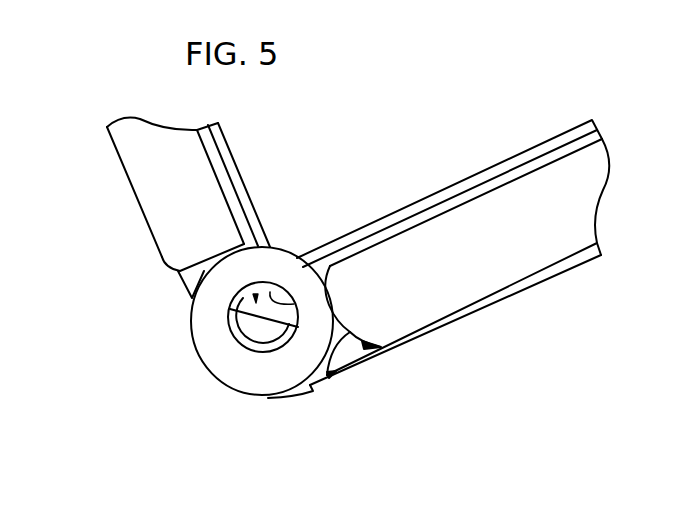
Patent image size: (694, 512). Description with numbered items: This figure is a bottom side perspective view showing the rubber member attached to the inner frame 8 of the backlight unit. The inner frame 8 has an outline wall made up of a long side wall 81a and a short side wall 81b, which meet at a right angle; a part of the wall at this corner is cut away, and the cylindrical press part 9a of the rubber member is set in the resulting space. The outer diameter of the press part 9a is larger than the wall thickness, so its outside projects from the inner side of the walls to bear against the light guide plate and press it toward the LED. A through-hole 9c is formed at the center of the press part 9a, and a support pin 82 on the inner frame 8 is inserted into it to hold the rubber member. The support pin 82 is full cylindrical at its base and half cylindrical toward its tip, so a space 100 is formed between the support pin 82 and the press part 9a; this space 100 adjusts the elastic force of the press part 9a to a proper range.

The inner frame 8 is at (558, 274).
The long side wall 81a is at (430, 323).
The short side wall 81b is at (172, 190).
The press part 9a is at (193, 340).
The through-hole 9c is at (282, 288).
The support pin 82 is at (253, 332).
The space 100 is at (228, 294).